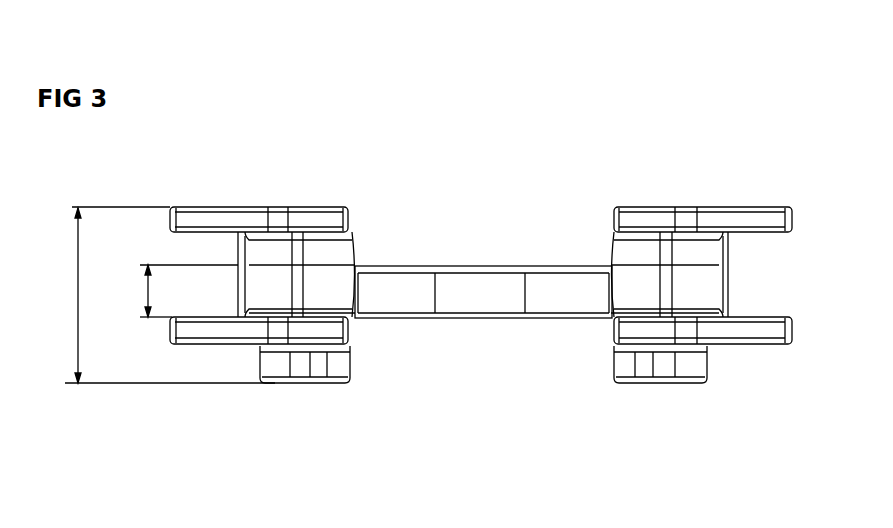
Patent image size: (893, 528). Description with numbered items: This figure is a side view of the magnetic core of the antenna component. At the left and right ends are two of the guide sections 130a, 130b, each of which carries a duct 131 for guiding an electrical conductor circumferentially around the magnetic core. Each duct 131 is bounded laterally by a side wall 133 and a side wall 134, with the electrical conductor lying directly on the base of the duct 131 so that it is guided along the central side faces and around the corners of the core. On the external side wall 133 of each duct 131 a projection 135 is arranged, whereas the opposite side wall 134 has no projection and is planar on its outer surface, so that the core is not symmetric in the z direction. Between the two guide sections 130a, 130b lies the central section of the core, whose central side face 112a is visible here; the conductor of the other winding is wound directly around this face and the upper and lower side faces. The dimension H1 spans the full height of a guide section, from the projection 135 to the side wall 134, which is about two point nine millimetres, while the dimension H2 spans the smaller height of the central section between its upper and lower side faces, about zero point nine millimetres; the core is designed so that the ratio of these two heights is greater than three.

The guide section 130a is at (333, 188).
The guide section 130b is at (680, 193).
The duct 131 is at (330, 273).
The side wall 133 is at (210, 347).
The side wall 134 is at (262, 203).
The projection 135 is at (313, 388).
The central side face 112a is at (462, 302).
The overall height H1 is at (154, 295).
The bar height H2 is at (178, 291).